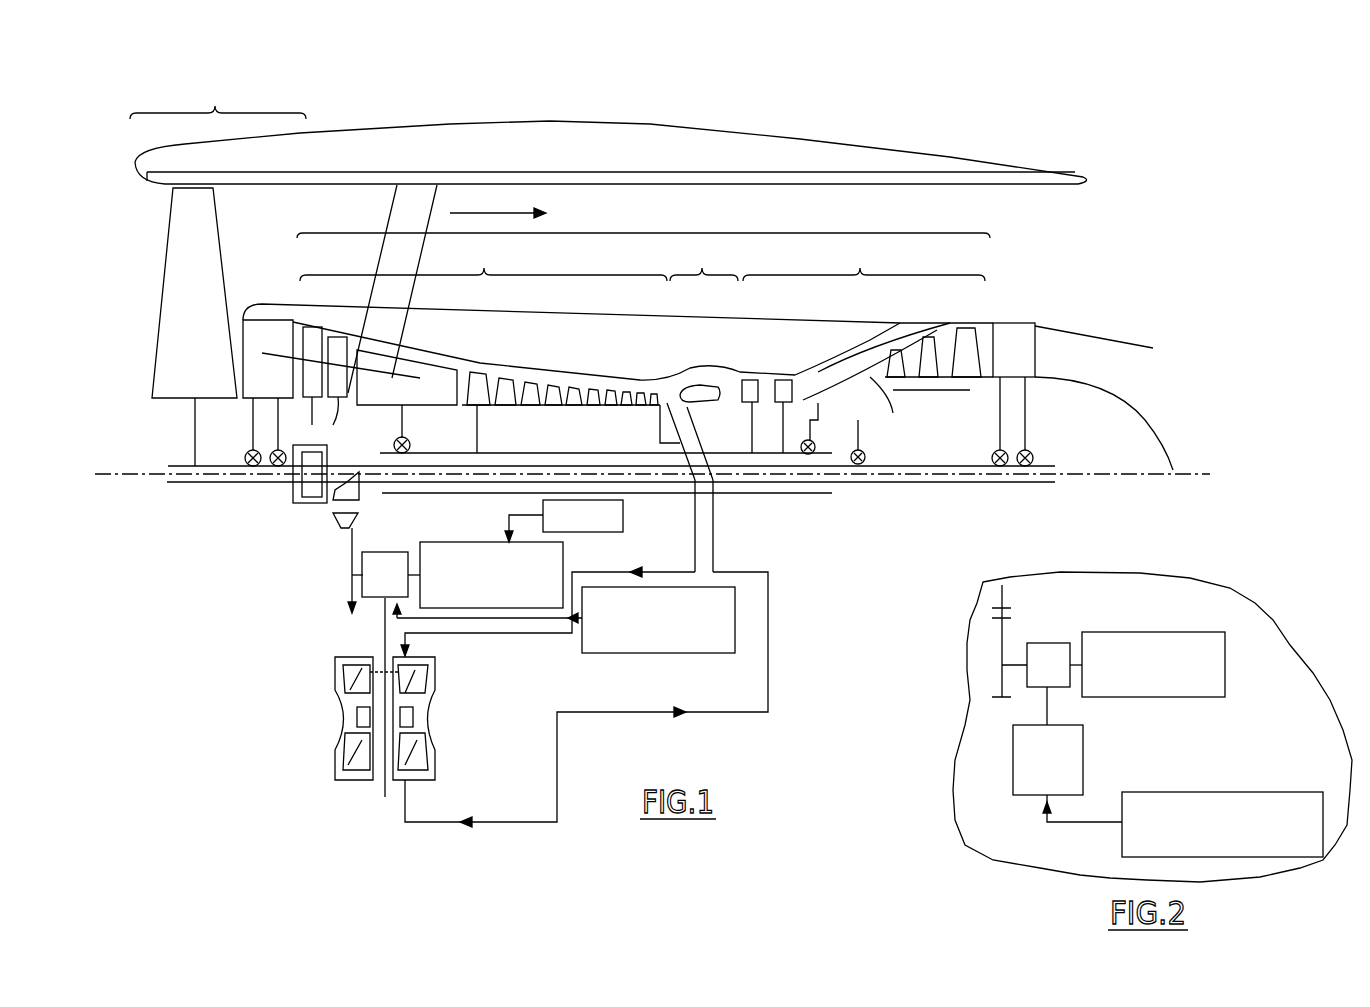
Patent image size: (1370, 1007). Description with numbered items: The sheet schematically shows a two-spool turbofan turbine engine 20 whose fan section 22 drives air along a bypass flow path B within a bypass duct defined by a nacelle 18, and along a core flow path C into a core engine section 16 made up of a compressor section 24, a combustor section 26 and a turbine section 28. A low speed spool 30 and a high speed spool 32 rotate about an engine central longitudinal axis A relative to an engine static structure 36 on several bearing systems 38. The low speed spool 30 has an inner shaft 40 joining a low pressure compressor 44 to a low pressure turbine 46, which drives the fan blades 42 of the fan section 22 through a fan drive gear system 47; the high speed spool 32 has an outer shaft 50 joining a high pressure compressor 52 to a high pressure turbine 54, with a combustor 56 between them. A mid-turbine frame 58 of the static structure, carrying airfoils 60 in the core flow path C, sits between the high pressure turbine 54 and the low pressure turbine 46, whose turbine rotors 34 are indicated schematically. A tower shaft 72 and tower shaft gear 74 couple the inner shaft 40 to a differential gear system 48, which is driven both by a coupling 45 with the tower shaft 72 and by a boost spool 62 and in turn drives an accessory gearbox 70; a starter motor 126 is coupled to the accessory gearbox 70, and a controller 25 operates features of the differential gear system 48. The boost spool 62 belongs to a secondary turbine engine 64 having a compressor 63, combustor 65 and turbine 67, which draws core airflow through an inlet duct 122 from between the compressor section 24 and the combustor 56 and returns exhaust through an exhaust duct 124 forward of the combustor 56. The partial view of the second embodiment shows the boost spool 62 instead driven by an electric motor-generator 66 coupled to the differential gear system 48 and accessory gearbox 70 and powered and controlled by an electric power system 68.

In FIG. 1, the core engine section 16 is at (270, 172).
In FIG. 1, the nacelle 18 is at (745, 150).
In FIG. 1, the turbine engine 20 is at (1073, 241).
In FIG. 1, the fan section 22 is at (215, 106).
In FIG. 1, the compressor section 24 is at (483, 262).
In FIG. 1, the controller 25 is at (668, 655).
In FIG. 1, the combustor section 26 is at (704, 261).
In FIG. 1, the turbine section 28 is at (864, 261).
In FIG. 1, the low speed spool 30 is at (902, 487).
In FIG. 1, the high speed spool 32 is at (697, 441).
In FIG. 1, the turbine rotors 34 is at (900, 357).
In FIG. 1, the engine static structure 36 is at (412, 362).
In FIG. 1, the bearing systems 38 is at (270, 482).
In FIG. 1, the inner shaft 40 is at (683, 494).
In FIG. 1, the fan blades 42 is at (206, 274).
In FIG. 1, the low pressure compressor 44 is at (318, 328).
In FIG. 1, the coupling 45 is at (318, 545).
In FIG. 1, the low pressure turbine 46 is at (943, 340).
In FIG. 1, the fan drive gear system 47 is at (310, 505).
In FIG. 1, the differential gear system 48 is at (378, 552).
In FIG. 2, the differential gear system 48 is at (1057, 643).
In FIG. 1, the outer shaft 50 is at (738, 495).
In FIG. 1, the high pressure compressor 52 is at (559, 369).
In FIG. 1, the high pressure turbine 54 is at (772, 380).
In FIG. 1, the combustor 56 is at (694, 384).
In FIG. 1, the mid-turbine frame 58 is at (840, 362).
In FIG. 1, the airfoils 60 is at (848, 412).
In FIG. 1, the boost spool 62 is at (392, 701).
In FIG. 2, the boost spool 62 is at (1056, 704).
In FIG. 1, the compressor 63 is at (331, 738).
In FIG. 1, the secondary turbine engine 64 is at (444, 718).
In FIG. 1, the combustor 65 is at (358, 714).
In FIG. 2, the electric motor-generator 66 is at (1086, 771).
In FIG. 1, the turbine 67 is at (360, 765).
In FIG. 2, the electric power system 68 is at (1243, 790).
In FIG. 1, the accessory gearbox 70 is at (563, 563).
In FIG. 2, the accessory gearbox 70 is at (1227, 668).
In FIG. 1, the tower shaft 72 is at (368, 500).
In FIG. 1, the tower shaft gear 74 is at (350, 585).
In FIG. 1, the inlet duct 122 is at (516, 634).
In FIG. 1, the exhaust duct 124 is at (506, 823).
In FIG. 1, the starter motor 126 is at (625, 518).
In FIG. 1, the engine central longitudinal axis A is at (120, 474).
In FIG. 1, the bypass flow path B is at (488, 212).
In FIG. 1, the core flow path C is at (432, 386).